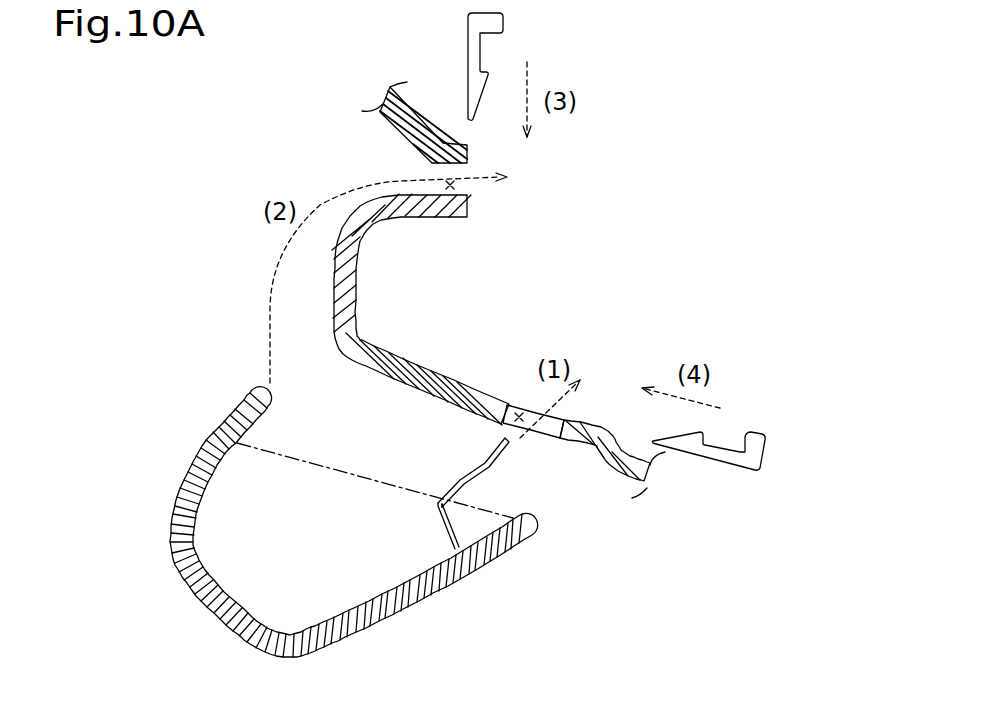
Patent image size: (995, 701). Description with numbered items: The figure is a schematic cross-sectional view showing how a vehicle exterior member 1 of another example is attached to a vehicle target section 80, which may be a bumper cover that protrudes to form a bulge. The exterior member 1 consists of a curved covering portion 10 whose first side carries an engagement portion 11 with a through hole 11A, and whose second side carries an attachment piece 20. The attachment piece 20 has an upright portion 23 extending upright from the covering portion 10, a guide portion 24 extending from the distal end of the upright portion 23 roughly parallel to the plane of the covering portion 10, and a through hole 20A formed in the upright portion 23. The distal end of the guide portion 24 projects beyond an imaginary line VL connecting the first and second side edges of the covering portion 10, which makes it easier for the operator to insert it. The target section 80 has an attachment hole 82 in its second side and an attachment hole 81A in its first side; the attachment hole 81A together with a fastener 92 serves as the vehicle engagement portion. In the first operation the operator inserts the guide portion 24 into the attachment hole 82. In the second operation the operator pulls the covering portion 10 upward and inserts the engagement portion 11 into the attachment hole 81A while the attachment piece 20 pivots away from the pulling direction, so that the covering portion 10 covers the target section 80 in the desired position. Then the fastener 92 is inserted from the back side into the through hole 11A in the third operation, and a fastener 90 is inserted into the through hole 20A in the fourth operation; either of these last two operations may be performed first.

The vehicle exterior member 1 is at (329, 496).
The covering portion 10 is at (204, 614).
The engagement portion 11 is at (254, 380).
The through hole 11A is at (232, 402).
The attachment piece 20 is at (469, 502).
The through hole 20A is at (461, 512).
The upright portion 23 is at (442, 554).
The guide portion 24 is at (459, 463).
The vehicle target section 80 is at (365, 295).
The attachment hole 81A is at (457, 188).
The attachment hole 82 is at (518, 410).
The fastener 90 is at (712, 461).
The fastener 92 is at (468, 55).
The imaginary line VL is at (327, 468).